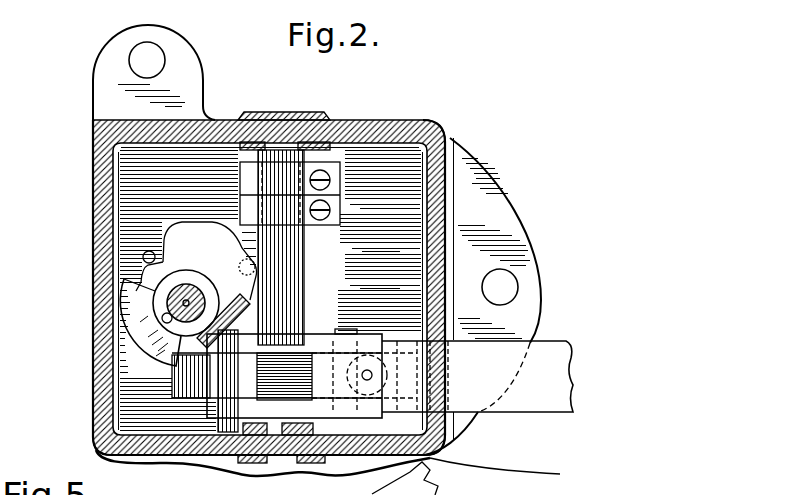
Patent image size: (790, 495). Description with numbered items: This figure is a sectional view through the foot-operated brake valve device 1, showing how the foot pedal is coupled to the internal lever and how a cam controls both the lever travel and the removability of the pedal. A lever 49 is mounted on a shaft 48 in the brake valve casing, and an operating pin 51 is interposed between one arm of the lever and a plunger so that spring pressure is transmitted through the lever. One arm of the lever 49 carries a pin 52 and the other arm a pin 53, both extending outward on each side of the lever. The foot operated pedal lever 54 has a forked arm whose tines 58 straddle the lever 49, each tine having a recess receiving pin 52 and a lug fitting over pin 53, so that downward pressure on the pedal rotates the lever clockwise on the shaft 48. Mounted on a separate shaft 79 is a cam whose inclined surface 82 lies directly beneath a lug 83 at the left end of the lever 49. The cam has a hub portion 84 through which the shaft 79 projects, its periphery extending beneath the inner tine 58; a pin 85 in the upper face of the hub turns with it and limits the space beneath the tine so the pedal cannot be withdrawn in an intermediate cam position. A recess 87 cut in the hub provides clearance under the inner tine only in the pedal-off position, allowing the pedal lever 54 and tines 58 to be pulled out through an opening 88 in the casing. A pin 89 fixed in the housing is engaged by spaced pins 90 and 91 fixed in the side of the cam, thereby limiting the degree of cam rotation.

The foot-operated brake valve device 1 is at (397, 128).
The shaft 48 is at (286, 255).
The lever 49 is at (334, 326).
The operating pin 51 is at (380, 478).
The pin 52 is at (228, 332).
The pin 53 is at (348, 327).
The foot operated pedal lever 54 is at (560, 352).
The tine 58 is at (292, 350).
The shaft 79 is at (182, 301).
The inclined surface 82 is at (150, 350).
The lug 83 is at (182, 378).
The hub portion 84 is at (168, 283).
The pin 85 is at (162, 319).
The recess 87 is at (232, 292).
The opening 88 is at (188, 237).
The pin 89 is at (149, 250).
The pin 90 is at (122, 302).
The pin 91 is at (246, 259).